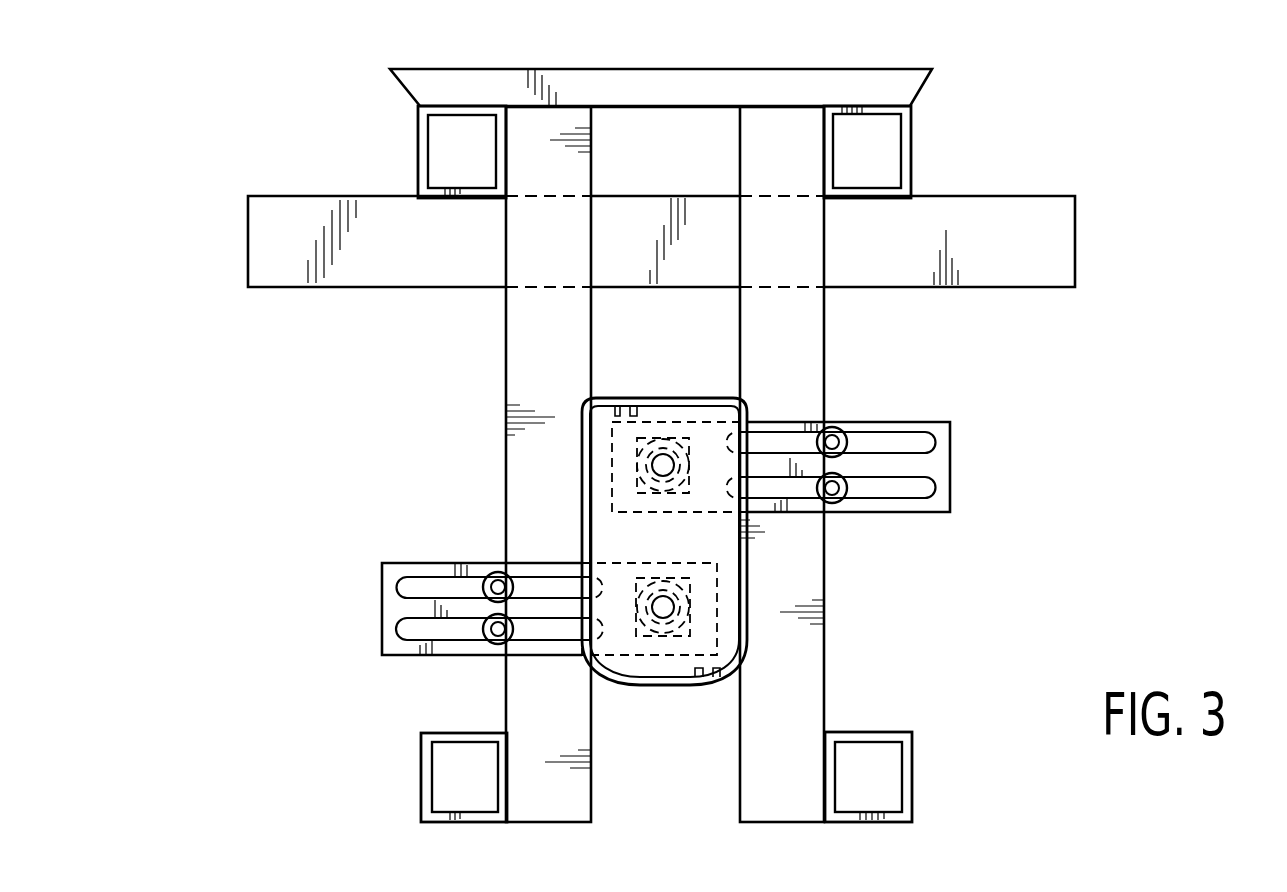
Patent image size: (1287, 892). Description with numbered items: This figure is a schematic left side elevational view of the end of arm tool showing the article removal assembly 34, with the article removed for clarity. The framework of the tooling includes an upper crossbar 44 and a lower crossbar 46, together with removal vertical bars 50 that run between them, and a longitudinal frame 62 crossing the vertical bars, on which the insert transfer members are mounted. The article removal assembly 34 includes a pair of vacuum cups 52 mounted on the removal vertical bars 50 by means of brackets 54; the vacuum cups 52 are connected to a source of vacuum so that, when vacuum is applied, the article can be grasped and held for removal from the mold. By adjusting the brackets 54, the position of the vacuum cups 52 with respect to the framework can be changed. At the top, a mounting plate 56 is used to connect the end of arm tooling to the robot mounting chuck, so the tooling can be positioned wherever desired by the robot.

The article removal assembly 34 is at (305, 430).
The upper crossbar 44 is at (418, 165).
The lower crossbar 46 is at (440, 733).
The removal vertical bars 50 is at (506, 345).
The vacuum cups 52 is at (668, 432).
The brackets 54 is at (882, 422).
The mounting plate 56 is at (790, 74).
The longitudinal frame 62 is at (1035, 196).